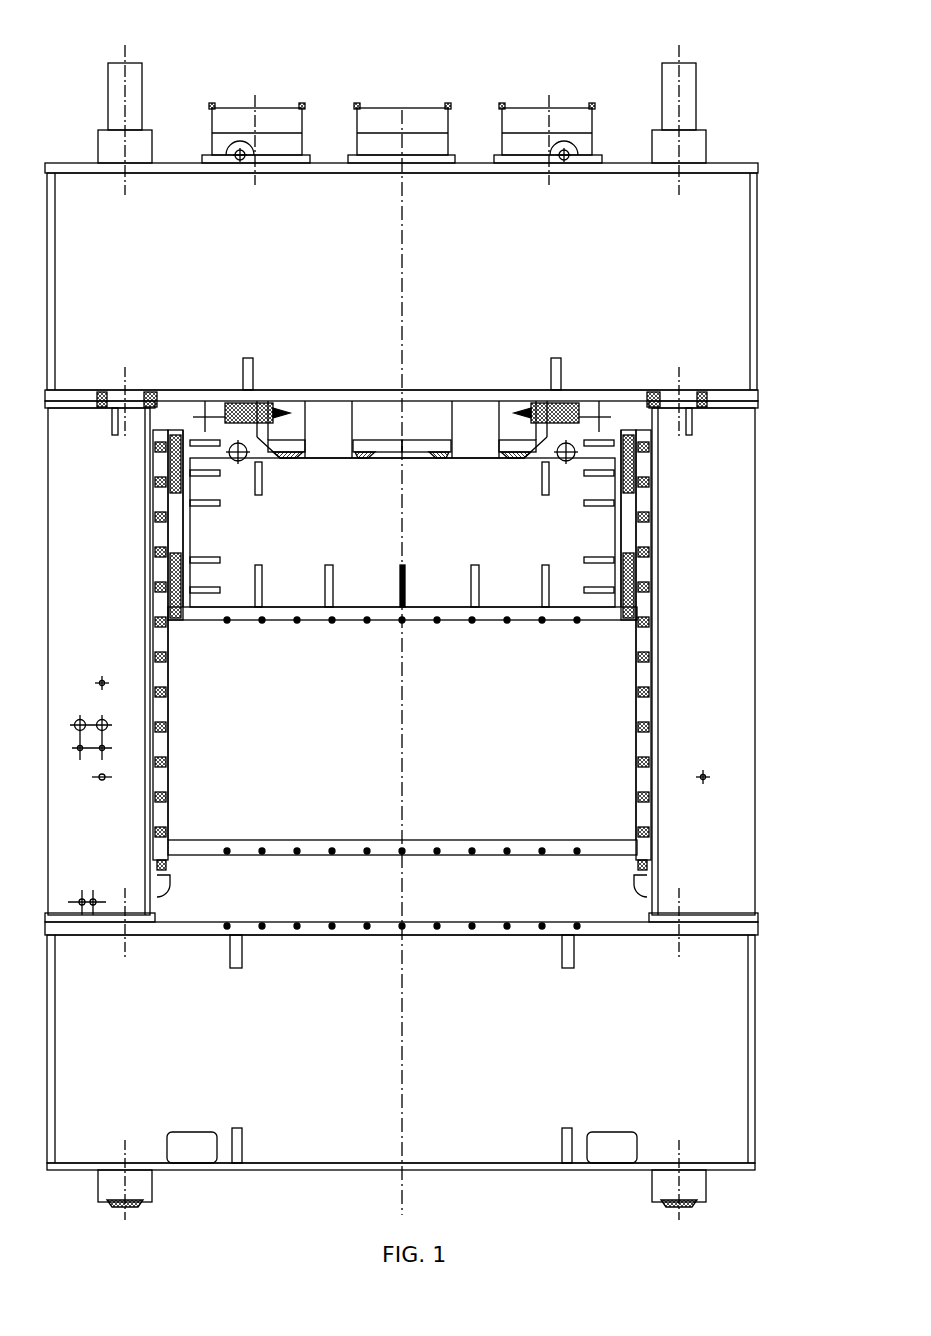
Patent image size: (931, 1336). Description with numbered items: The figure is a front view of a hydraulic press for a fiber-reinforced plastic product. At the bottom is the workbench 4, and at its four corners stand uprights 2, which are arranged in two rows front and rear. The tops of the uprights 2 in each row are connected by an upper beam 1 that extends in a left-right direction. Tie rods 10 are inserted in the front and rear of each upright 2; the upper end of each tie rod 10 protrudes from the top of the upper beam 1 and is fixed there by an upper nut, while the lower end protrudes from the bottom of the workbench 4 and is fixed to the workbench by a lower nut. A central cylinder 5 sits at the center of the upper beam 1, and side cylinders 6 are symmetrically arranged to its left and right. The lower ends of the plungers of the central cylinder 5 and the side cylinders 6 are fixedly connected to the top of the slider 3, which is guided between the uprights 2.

The upper beam 1 is at (718, 218).
The upright 2 is at (720, 652).
The slider 3 is at (572, 535).
The workbench 4 is at (607, 930).
The central cylinder 5 is at (425, 115).
The side cylinder 6 is at (268, 118).
The tie rod 10 is at (133, 73).